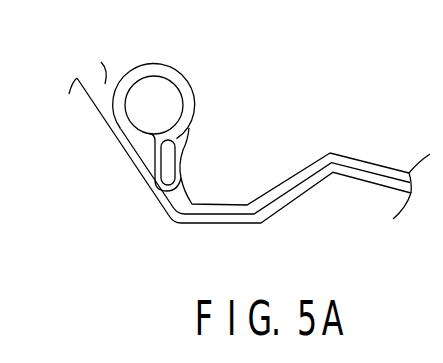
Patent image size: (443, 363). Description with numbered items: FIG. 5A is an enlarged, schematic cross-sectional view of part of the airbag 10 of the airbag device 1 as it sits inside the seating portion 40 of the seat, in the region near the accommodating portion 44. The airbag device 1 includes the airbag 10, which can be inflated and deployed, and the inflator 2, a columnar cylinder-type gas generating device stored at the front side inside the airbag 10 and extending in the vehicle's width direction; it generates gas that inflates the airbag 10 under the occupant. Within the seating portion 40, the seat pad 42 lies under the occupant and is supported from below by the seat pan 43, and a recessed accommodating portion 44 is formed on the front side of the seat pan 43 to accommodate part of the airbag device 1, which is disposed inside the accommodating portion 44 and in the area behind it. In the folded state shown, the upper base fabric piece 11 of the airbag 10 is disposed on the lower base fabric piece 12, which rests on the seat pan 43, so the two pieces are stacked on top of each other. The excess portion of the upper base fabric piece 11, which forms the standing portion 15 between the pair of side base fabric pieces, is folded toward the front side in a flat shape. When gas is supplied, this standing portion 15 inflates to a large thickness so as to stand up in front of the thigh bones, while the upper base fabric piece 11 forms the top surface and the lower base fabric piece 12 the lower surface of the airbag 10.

The airbag device 1 is at (249, 170).
The inflator 2 is at (163, 91).
The airbag 10 is at (329, 157).
The upper base fabric piece 11 is at (242, 204).
The lower base fabric piece 12 is at (192, 224).
The standing portion 15 is at (190, 155).
The seating portion 40 is at (337, 183).
The seat pad 42 is at (366, 150).
The seat pan 43 is at (312, 190).
The accommodating portion 44 is at (131, 168).